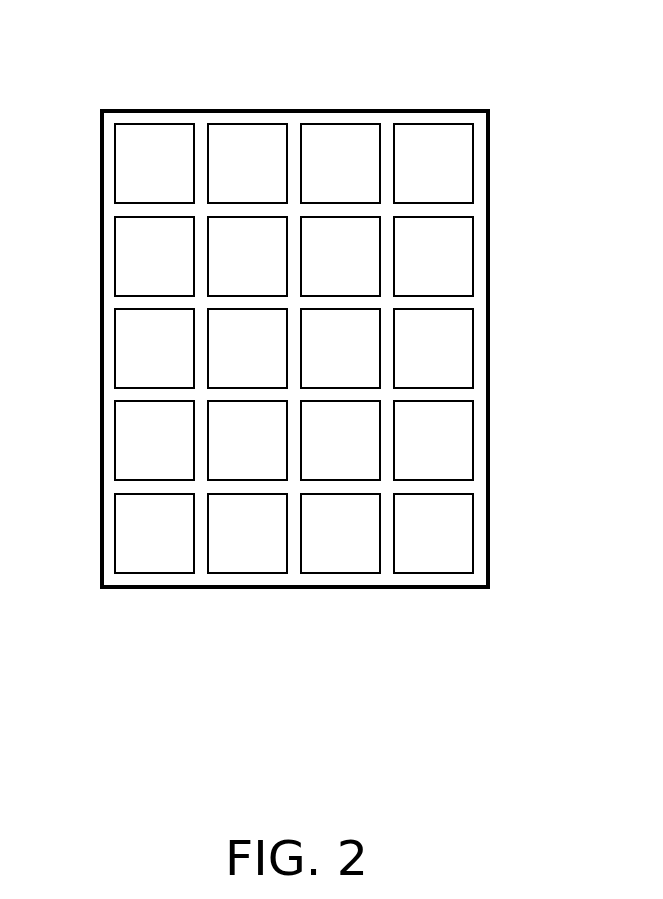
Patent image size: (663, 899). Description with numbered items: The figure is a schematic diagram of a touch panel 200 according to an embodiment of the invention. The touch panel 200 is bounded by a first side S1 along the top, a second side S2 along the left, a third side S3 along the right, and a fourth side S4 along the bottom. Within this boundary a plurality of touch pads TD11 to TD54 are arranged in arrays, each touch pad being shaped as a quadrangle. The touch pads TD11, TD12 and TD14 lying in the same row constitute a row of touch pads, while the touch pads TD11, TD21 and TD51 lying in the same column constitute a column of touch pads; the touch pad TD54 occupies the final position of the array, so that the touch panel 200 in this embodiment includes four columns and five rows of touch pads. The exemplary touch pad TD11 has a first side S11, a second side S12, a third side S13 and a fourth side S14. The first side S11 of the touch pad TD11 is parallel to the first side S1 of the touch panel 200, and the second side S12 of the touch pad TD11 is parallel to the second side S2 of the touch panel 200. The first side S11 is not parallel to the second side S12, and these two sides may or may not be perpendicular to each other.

The touch panel 200 is at (625, 648).
The first side S1 is at (335, 110).
The second side S2 is at (102, 345).
The third side S3 is at (488, 345).
The fourth side S4 is at (335, 590).
The touch pad TD11 is at (162, 150).
The touch pad TD12 is at (253, 150).
The touch pad TD14 is at (432, 150).
The touch pad TD21 is at (133, 268).
The touch pad TD51 is at (133, 532).
The touch pad TD54 is at (455, 532).
The first side S11 is at (134, 122).
The second side S12 is at (115, 155).
The third side S13 is at (197, 153).
The fourth side S14 is at (133, 206).